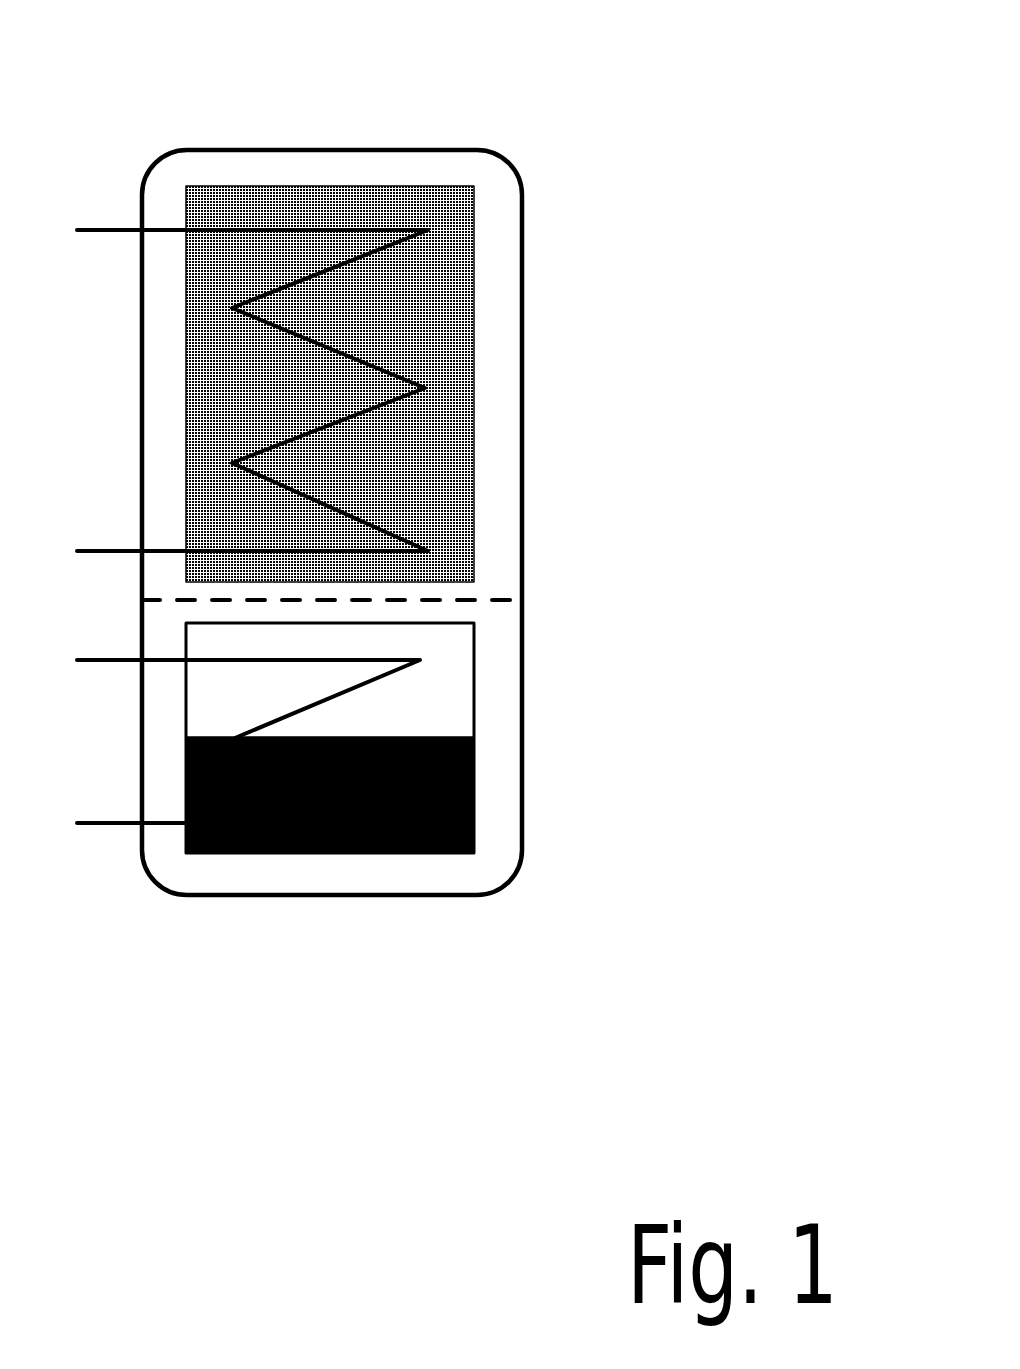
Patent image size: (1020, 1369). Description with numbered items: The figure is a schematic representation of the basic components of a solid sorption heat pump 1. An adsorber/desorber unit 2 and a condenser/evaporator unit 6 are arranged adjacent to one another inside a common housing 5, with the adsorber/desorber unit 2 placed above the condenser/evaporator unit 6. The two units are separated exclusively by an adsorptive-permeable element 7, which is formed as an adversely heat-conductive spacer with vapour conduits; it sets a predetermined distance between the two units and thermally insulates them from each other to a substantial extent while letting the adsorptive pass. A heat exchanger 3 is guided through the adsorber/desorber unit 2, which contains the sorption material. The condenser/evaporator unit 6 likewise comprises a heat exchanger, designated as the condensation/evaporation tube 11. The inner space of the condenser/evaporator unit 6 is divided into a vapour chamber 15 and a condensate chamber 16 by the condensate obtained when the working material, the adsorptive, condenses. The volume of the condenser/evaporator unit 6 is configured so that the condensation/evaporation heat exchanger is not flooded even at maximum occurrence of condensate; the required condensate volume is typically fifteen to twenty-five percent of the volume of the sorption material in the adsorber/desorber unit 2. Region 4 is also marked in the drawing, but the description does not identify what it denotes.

The solid sorption heat pump 1 is at (304, 1035).
The adsorber/desorber unit 2 is at (398, 186).
The heat exchanger 3 is at (348, 353).
The adsorber chamber 4 is at (433, 457).
The housing 5 is at (497, 878).
The condenser/evaporator unit 6 is at (368, 855).
The adsorptive-permeable element 7 is at (440, 597).
The condensation/evaporation tube 11 is at (420, 660).
The vapour chamber 15 is at (423, 702).
The condensate chamber 16 is at (473, 802).